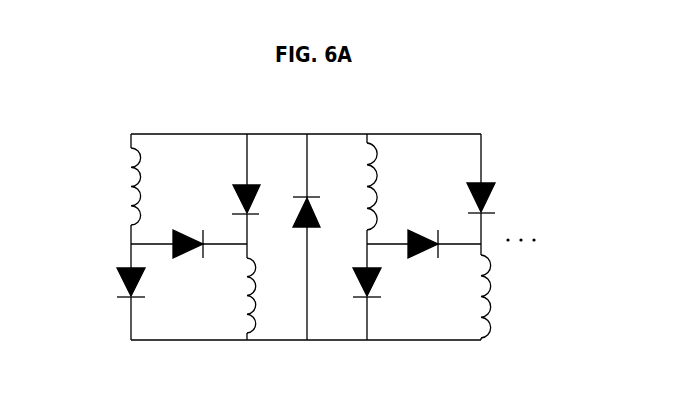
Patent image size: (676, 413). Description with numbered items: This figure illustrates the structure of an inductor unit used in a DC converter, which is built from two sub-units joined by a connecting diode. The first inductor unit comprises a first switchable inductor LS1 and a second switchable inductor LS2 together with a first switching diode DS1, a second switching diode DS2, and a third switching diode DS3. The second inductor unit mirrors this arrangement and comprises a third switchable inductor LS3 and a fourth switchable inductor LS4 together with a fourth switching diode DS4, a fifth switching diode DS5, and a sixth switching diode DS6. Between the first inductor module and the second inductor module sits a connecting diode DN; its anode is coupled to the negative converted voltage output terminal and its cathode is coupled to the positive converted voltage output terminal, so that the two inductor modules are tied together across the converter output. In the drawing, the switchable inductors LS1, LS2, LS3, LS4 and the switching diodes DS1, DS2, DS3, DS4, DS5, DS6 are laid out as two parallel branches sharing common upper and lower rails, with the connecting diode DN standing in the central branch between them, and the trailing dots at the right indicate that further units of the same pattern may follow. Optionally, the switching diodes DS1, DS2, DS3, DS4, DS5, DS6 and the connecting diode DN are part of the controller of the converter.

The first switchable inductor LS1 is at (116, 184).
The second switchable inductor LS2 is at (228, 295).
The third switchable inductor LS3 is at (348, 185).
The fourth switchable inductor LS4 is at (510, 296).
The first switching diode DS1 is at (157, 282).
The second switching diode DS2 is at (228, 179).
The third switching diode DS3 is at (188, 230).
The fourth switching diode DS4 is at (390, 285).
The fifth switching diode DS5 is at (503, 194).
The sixth switching diode DS6 is at (415, 229).
The connecting diode DN is at (294, 227).